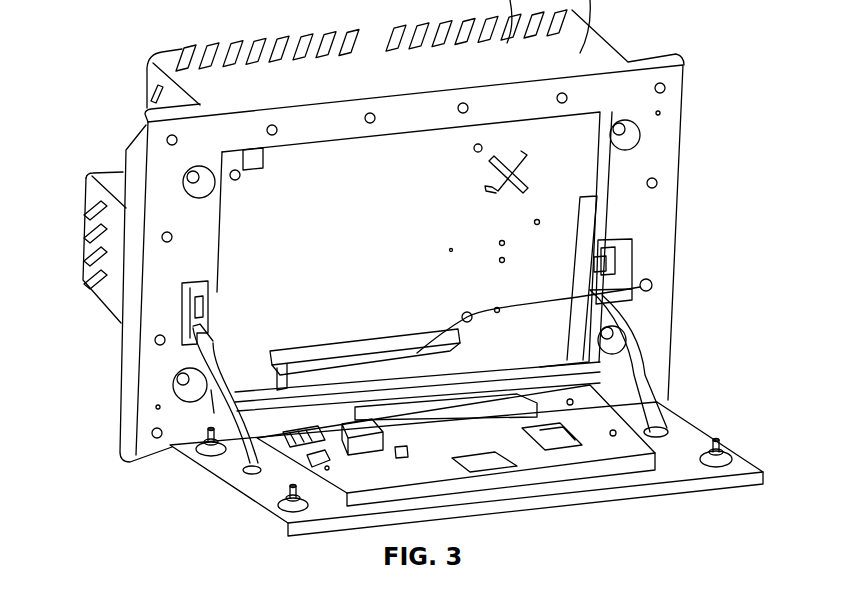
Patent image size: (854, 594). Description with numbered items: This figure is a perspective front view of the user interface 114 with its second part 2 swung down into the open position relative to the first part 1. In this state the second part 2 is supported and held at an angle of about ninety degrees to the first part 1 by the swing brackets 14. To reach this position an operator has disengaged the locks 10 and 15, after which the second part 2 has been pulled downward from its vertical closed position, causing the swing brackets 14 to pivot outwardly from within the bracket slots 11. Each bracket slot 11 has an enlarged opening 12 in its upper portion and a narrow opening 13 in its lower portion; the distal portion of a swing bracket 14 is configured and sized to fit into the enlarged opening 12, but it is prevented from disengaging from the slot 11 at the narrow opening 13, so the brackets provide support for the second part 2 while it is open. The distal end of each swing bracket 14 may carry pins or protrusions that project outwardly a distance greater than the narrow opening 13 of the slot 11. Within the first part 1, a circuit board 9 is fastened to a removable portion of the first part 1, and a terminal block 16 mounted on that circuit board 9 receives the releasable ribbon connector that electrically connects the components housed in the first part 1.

The first part 1 is at (215, 78).
The user interface 114 is at (315, 22).
The lock 10 is at (187, 177).
The circuit board 9 is at (450, 250).
The enlarged opening 12 is at (182, 296).
The narrow opening 13 is at (193, 322).
The bracket slot 11 is at (632, 273).
The terminal block 16 is at (653, 284).
The swing bracket 14 is at (648, 382).
The second part 2 is at (615, 440).
The lock 15 is at (268, 503).